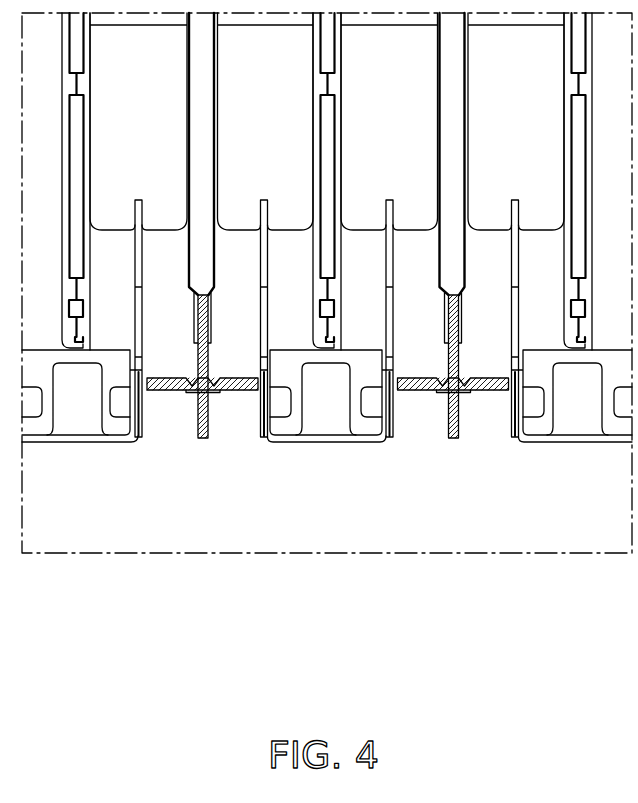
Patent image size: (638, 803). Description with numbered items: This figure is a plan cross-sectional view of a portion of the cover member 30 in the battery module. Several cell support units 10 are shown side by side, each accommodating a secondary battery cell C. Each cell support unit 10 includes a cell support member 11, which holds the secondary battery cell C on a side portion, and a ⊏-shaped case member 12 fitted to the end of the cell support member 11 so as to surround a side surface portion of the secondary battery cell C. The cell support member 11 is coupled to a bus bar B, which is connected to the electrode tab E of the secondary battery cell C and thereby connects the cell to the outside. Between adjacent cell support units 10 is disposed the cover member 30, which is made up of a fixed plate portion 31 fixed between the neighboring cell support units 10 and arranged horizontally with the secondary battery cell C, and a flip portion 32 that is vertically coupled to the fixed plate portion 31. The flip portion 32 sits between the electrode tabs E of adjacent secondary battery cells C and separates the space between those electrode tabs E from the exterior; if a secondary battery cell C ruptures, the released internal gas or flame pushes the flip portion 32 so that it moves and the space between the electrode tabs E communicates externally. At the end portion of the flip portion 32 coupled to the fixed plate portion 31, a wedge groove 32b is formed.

The cell support unit 10 is at (316, 350).
The cell support member 11 is at (83, 290).
The case member 12 is at (185, 257).
The secondary battery cell C is at (250, 183).
The electrode tab E is at (263, 322).
The bus bar B is at (327, 437).
The cover member 30 is at (329, 491).
The fixed plate portion 31 is at (457, 363).
The flip portion 32 is at (415, 390).
The wedge groove 32b is at (438, 390).